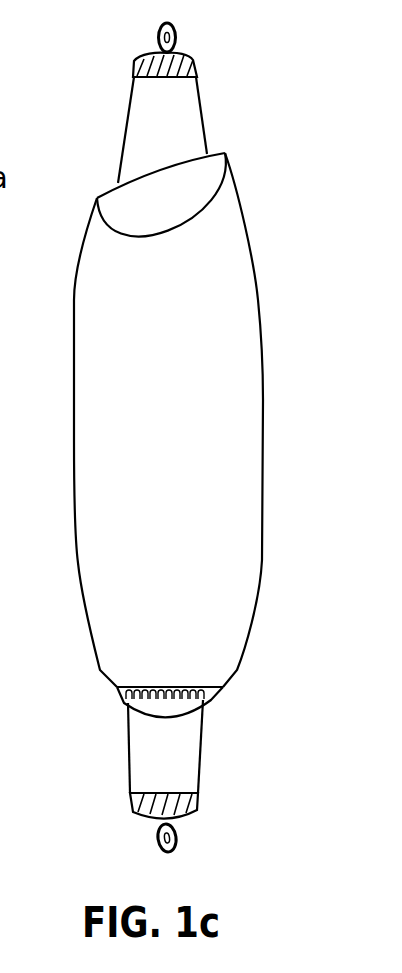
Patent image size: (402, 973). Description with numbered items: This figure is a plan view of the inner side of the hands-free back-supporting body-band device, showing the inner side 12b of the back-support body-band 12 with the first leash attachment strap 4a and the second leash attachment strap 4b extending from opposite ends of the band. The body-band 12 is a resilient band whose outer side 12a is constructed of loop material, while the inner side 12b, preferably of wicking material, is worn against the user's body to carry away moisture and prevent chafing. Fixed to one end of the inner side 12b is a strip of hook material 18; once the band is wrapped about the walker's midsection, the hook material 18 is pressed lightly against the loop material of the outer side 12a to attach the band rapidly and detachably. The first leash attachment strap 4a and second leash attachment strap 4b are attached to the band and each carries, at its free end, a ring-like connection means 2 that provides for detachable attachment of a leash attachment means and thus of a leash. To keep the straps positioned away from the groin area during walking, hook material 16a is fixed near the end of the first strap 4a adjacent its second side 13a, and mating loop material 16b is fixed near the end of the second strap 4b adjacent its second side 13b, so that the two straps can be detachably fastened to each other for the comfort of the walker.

The ring-like connection means 2 is at (176, 37).
The first part of hook and loop attachment means 16a is at (199, 68).
The first leash attachment strap 4a is at (207, 115).
The second side of first leash attachment strap 13a is at (120, 152).
The outer loop-material side of back-support body-band 12a is at (161, 194).
The inner side of back-support body-band 12b is at (87, 317).
The back-support body-band 12 is at (180, 422).
The hook-material part of attachment means 18 is at (218, 698).
The second leash attachment strap 4b is at (205, 737).
The second side of second leash attachment strap 13b is at (130, 752).
The second, mating part of hook and loop attachment means 16b is at (197, 803).